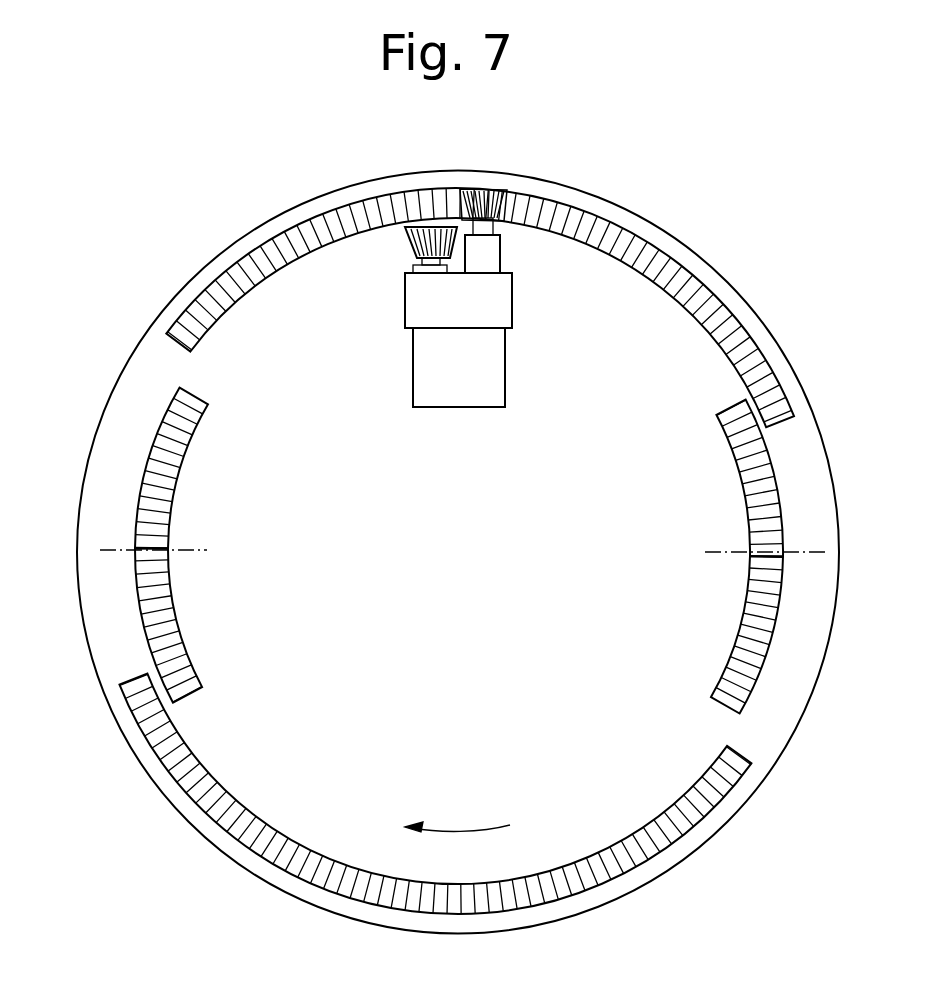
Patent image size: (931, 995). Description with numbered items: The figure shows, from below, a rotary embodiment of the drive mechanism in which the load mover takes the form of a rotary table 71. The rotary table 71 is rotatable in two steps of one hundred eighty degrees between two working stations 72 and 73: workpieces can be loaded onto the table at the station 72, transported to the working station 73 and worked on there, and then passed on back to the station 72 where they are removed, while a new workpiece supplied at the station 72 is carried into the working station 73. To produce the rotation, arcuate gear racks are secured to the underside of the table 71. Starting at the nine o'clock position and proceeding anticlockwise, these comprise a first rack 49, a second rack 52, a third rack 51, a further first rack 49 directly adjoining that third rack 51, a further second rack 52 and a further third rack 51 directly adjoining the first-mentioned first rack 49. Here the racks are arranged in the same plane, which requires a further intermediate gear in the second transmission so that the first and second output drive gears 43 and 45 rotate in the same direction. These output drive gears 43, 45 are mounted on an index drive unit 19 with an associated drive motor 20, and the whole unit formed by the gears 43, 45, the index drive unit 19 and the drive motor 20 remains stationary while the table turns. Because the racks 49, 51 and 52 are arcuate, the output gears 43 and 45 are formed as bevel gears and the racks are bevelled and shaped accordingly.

The index drive unit 19 is at (403, 302).
The drive motor 20 is at (422, 383).
The first output drive gear 43 is at (430, 226).
The second output drive gear 45 is at (493, 190).
The first rack 49 is at (181, 637).
The third rack 51 is at (180, 462).
The second rack 52 is at (664, 276).
The rotary table 71 is at (452, 925).
The working station 72 is at (100, 550).
The working station 73 is at (808, 552).